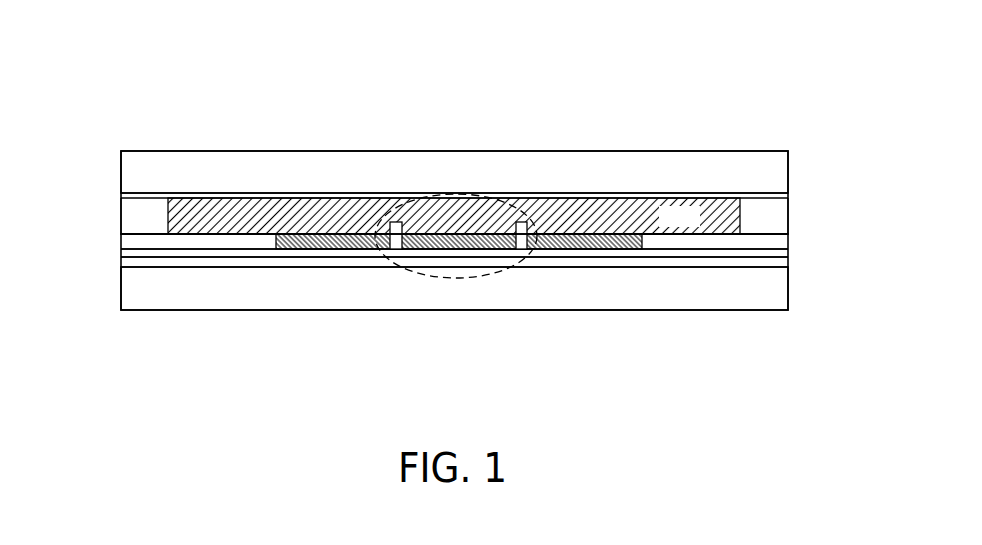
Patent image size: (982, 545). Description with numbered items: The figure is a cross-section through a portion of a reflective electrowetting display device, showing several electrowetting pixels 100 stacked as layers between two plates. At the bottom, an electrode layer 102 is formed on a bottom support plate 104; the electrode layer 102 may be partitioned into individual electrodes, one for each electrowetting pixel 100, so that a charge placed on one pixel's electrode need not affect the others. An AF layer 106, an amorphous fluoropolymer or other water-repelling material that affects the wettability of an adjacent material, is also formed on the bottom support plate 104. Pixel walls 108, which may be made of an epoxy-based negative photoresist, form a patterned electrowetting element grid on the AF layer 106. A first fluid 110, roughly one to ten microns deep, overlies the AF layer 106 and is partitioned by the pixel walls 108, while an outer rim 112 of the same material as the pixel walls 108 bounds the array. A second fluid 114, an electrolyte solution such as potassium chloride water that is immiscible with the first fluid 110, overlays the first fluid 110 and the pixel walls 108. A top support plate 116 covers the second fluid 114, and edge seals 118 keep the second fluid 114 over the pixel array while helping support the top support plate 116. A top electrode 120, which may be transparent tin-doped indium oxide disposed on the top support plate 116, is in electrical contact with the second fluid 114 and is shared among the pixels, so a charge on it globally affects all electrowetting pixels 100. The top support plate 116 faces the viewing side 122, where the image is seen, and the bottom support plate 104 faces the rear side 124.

The electrowetting pixel 100 is at (475, 277).
The electrode layer 102 is at (121, 262).
The bottom support plate 104 is at (193, 296).
The AF layer 106 is at (121, 255).
The pixel walls 108 is at (398, 250).
The first fluid 110 is at (568, 249).
The outer rim 112 is at (121, 240).
The second fluid 114 is at (696, 225).
The top support plate 116 is at (193, 183).
The edge seals 118 is at (788, 213).
The top electrode 120 is at (633, 192).
The viewing side 122 is at (560, 68).
The rear side 124 is at (235, 352).